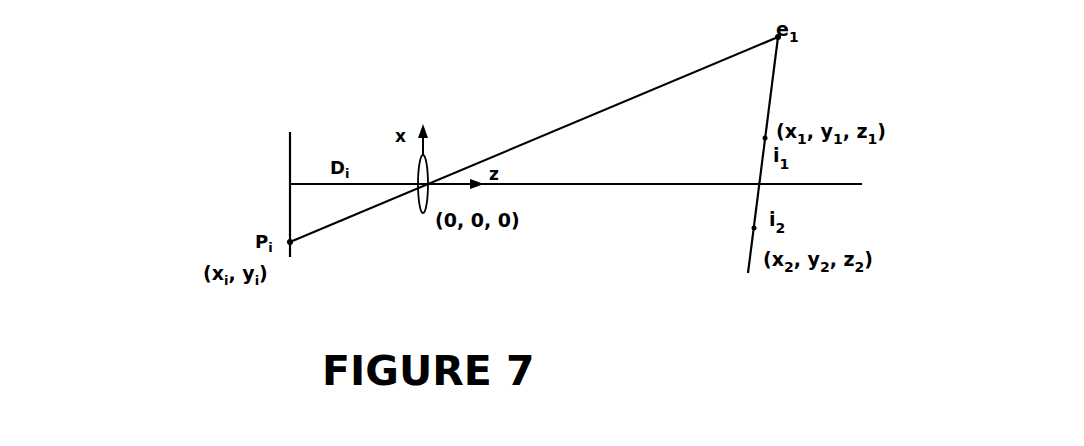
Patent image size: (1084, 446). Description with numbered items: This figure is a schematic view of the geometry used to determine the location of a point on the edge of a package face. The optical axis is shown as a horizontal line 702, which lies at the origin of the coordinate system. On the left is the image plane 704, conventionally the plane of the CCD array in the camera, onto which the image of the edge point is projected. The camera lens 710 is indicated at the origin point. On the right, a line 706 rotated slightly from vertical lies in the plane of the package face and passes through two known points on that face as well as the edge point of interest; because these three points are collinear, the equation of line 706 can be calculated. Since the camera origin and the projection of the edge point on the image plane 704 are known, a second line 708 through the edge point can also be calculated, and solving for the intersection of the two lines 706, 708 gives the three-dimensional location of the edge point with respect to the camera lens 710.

The optical axis 702 is at (612, 186).
The image plane 704 is at (289, 141).
The line in the plane of the package face 706 is at (770, 90).
The second line 708 is at (630, 97).
The camera lens 710 is at (430, 158).